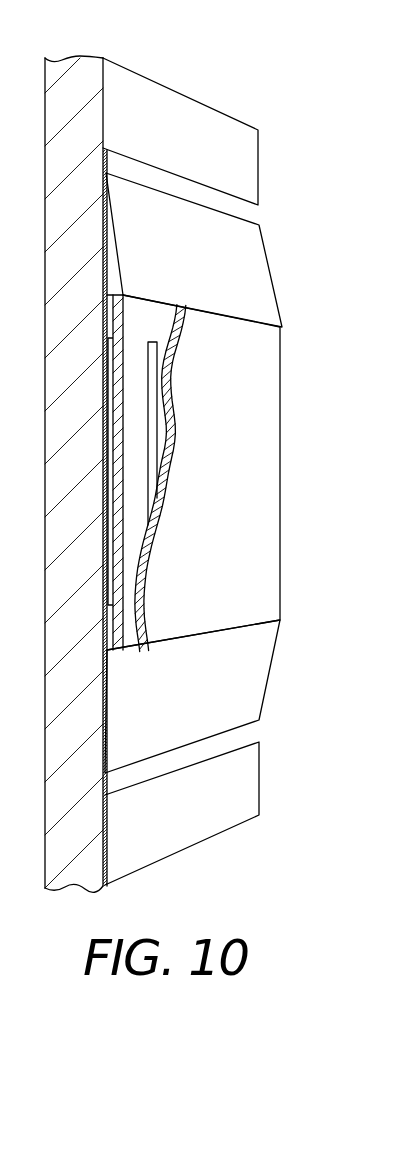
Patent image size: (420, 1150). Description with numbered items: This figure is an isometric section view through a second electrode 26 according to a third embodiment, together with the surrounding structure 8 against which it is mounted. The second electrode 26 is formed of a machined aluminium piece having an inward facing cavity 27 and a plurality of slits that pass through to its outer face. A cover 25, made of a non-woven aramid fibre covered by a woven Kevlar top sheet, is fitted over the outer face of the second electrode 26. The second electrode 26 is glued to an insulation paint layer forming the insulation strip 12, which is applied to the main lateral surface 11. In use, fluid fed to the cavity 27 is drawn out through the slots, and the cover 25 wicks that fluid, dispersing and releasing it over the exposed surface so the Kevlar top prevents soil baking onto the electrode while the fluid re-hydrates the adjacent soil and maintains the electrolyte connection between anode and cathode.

The wall 8 is at (73, 66).
The main lateral surface 11 is at (250, 155).
The insulation strip 12 is at (262, 256).
The cover 25 is at (272, 472).
The second electrode 26 is at (117, 633).
The cavity 27 is at (110, 578).